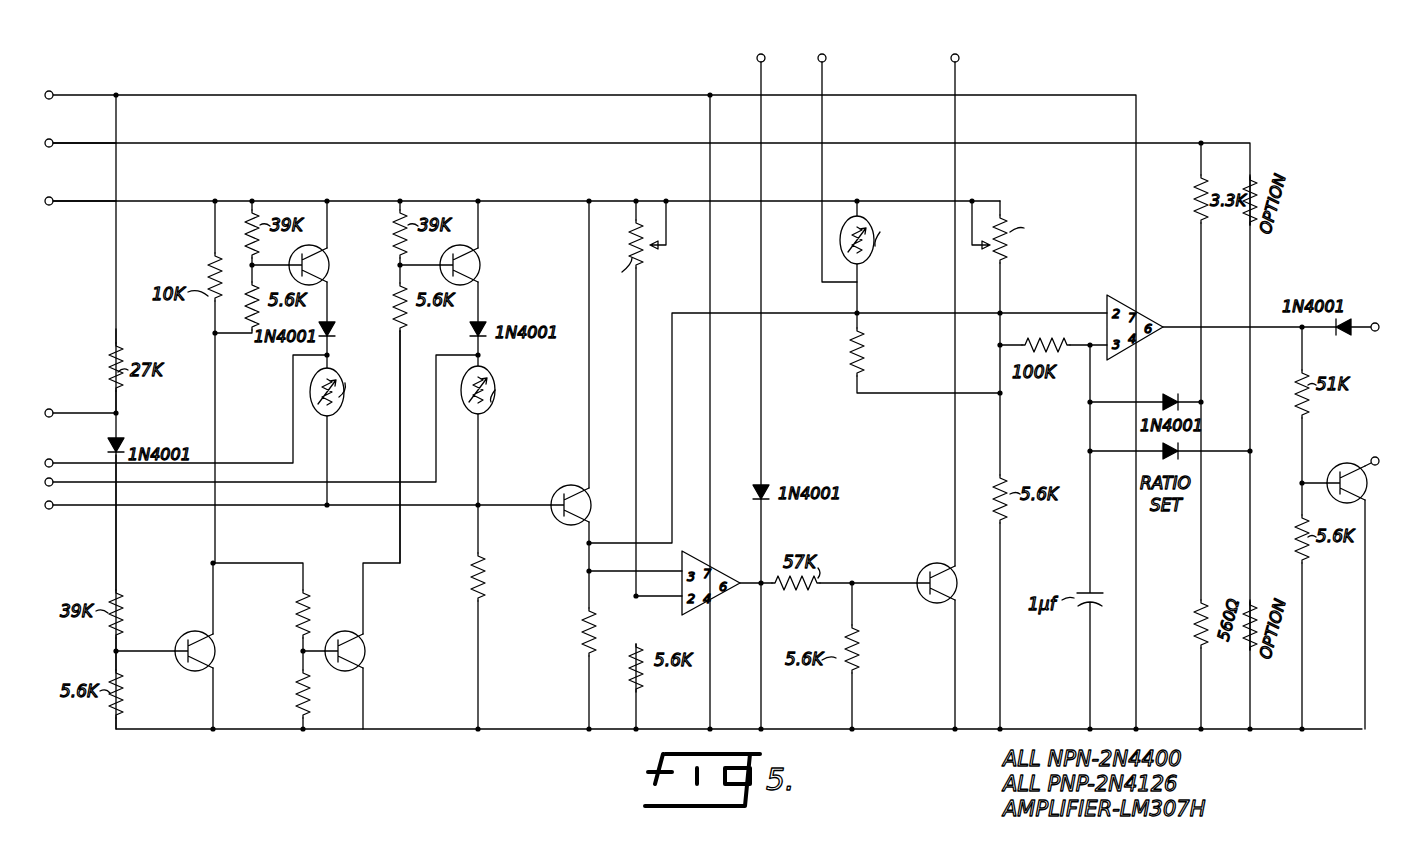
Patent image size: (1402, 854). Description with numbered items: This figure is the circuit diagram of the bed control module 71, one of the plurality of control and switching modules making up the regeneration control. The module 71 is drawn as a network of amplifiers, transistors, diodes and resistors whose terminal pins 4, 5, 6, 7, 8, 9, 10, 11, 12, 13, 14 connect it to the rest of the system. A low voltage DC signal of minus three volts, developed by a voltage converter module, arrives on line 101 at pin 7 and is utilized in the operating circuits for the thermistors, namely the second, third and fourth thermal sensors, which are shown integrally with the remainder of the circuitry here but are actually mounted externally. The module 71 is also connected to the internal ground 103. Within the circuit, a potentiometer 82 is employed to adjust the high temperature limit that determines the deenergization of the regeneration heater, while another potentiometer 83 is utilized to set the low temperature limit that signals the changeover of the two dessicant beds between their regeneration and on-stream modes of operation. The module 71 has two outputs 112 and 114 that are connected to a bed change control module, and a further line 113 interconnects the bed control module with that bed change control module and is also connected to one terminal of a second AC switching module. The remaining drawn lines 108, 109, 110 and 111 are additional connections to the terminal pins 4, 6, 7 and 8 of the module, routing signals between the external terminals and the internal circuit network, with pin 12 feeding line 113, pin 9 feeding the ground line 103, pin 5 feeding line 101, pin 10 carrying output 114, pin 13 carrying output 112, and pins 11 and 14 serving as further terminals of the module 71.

The bed control module 71 is at (552, 77).
The terminal 4 is at (40, 464).
The terminal 5 is at (40, 203).
The terminal 6 is at (40, 483).
The pin 7 is at (40, 506).
The terminal 8 is at (819, 47).
The terminal 9 is at (40, 145).
The terminal 10 is at (955, 47).
The output terminal 11 is at (1369, 327).
The terminal 12 is at (37, 414).
The pin 13 is at (1386, 461).
The terminal 14 is at (761, 382).
The potentiometer 82 is at (647, 252).
The potentiometer 83 is at (1010, 260).
The line 101 is at (97, 208).
The internal ground 103 is at (96, 140).
The diode line 108 is at (90, 468).
The line 109 is at (58, 490).
The line 110 is at (96, 506).
The line 111 is at (822, 70).
The output 112 is at (1366, 452).
The line 113 is at (92, 411).
The output 114 is at (955, 70).